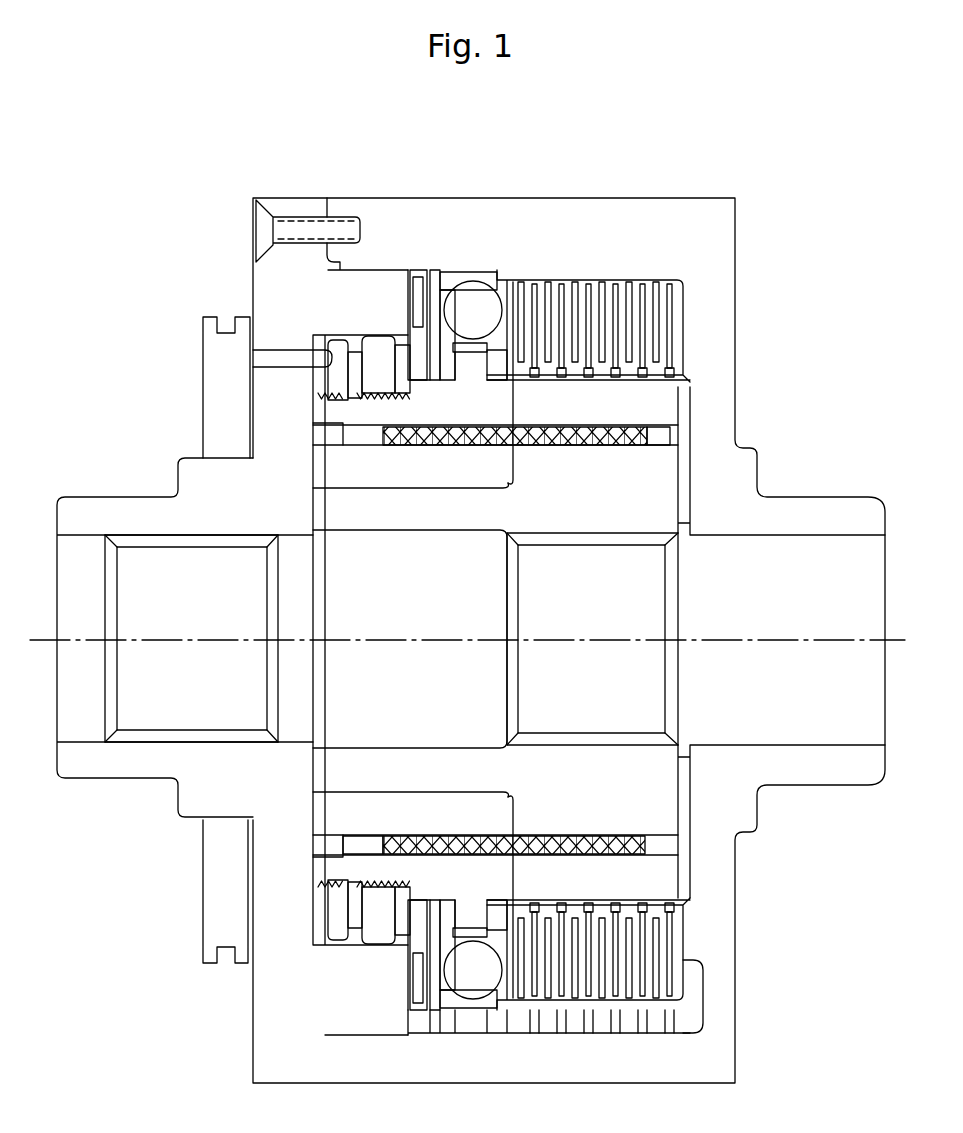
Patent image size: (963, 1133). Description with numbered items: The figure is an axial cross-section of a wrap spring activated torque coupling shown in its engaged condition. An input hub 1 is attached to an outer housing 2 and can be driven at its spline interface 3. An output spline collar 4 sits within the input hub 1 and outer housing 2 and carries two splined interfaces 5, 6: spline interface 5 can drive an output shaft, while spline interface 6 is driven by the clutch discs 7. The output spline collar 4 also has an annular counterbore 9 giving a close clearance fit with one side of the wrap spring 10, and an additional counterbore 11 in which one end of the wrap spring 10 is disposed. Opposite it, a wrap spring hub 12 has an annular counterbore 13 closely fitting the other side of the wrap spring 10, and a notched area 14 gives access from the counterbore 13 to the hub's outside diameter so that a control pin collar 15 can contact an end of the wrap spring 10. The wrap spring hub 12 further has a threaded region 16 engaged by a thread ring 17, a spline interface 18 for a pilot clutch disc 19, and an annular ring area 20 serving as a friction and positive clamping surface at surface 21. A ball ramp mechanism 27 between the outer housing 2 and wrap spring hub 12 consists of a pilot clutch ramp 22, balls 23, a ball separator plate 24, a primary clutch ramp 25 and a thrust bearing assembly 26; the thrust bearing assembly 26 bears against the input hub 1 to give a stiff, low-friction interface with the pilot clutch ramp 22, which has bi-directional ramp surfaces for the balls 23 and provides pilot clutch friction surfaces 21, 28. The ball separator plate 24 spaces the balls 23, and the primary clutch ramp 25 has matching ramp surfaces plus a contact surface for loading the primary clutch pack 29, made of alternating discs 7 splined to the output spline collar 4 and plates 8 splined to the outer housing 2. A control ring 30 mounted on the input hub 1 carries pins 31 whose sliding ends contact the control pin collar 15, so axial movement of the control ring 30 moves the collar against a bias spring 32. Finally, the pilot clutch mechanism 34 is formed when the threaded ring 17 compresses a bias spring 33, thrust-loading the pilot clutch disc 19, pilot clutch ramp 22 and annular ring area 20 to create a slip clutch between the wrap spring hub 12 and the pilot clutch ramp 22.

The input hub 1 is at (235, 502).
The outer housing 2 is at (657, 215).
The spline interface 3 is at (190, 540).
The output spline collar 4 is at (652, 505).
The spline interface 5 is at (630, 540).
The spline interface 6 is at (650, 380).
The clutch discs 7 is at (667, 307).
The plates 8 is at (653, 343).
The annular counterbore 9 is at (625, 420).
The wrap spring 10 is at (595, 450).
The counterbore 11 is at (660, 438).
The wrap spring hub 12 is at (333, 490).
The annular counterbore 13 is at (518, 500).
The notched area 14 is at (322, 427).
The control pin collar 15 is at (317, 345).
The threaded region 16 is at (318, 392).
The thread ring 17 is at (373, 372).
The spline interface 18 is at (418, 895).
The pilot clutch disc 19 is at (413, 362).
The annular ring area 20 is at (473, 378).
The surface 21 is at (490, 370).
The pilot clutch ramp 22 is at (434, 275).
The balls 23 is at (465, 295).
The ball separator plate 24 is at (502, 283).
The primary clutch ramp 25 is at (515, 288).
The thrust bearing assembly 26 is at (418, 277).
The ball ramp mechanism 27 is at (385, 138).
The pilot clutch friction surface 28 is at (440, 345).
The primary clutch pack 29 is at (793, 287).
The control ring 30 is at (220, 447).
The pins 31 is at (260, 360).
The bias spring 32 is at (410, 325).
The bias spring 33 is at (402, 362).
The pilot clutch mechanism 34 is at (362, 598).